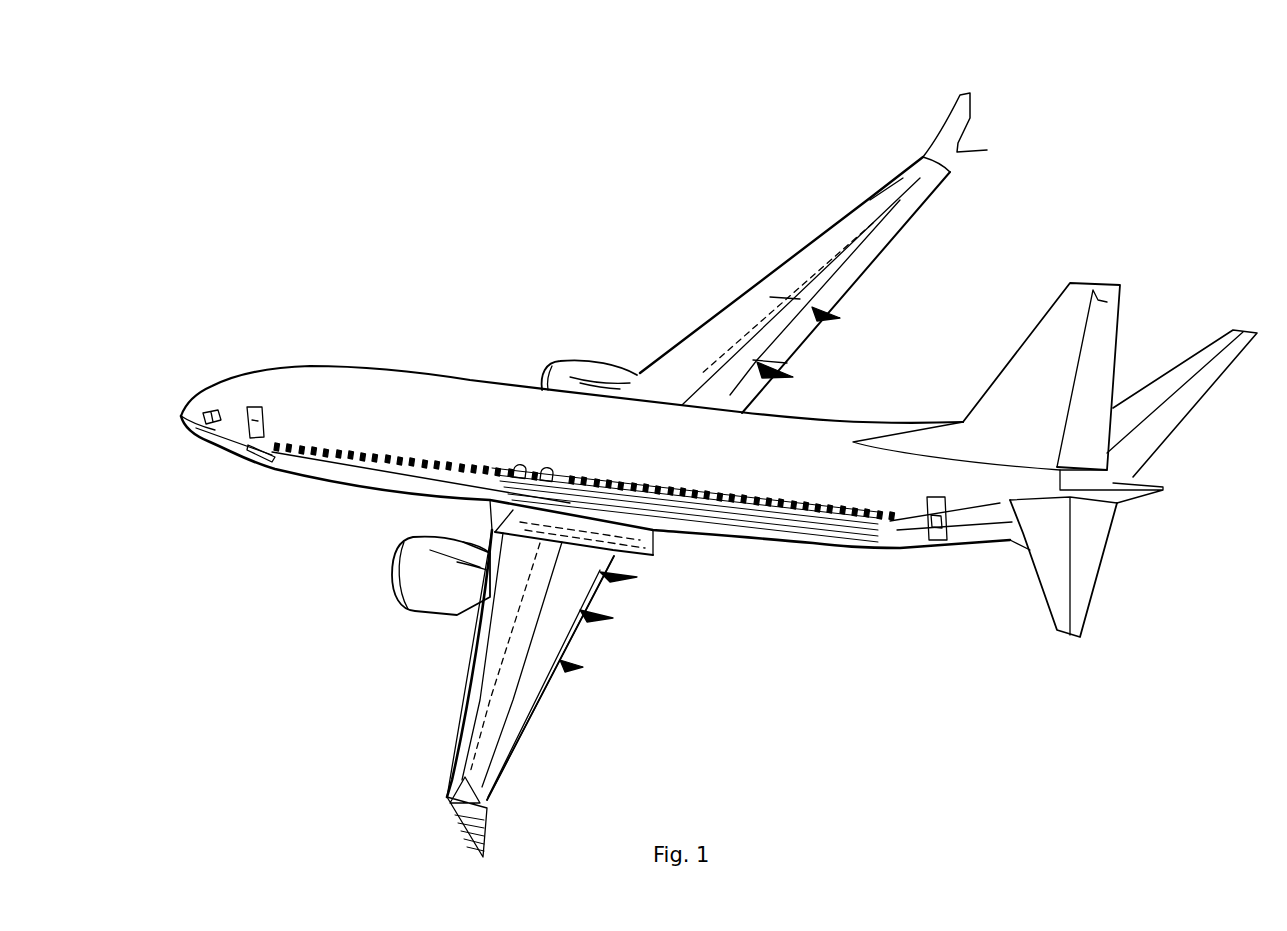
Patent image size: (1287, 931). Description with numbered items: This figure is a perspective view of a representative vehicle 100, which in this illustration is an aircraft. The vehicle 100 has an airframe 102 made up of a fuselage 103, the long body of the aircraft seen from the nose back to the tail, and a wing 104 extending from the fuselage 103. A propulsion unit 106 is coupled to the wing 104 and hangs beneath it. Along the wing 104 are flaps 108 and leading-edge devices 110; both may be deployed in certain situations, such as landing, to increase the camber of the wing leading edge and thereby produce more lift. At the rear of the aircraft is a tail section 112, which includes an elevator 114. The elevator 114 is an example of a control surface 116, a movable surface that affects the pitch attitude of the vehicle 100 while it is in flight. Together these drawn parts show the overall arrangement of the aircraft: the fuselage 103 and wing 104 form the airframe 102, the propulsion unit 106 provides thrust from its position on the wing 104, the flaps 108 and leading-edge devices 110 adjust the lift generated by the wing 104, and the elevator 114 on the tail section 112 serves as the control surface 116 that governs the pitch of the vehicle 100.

The vehicle 100 is at (721, 113).
The airframe 102 is at (378, 318).
The fuselage 103 is at (335, 485).
The wing 104 is at (483, 740).
The propulsion unit 106 is at (447, 617).
The flaps 108 is at (533, 727).
The leading-edge devices 110 is at (480, 680).
The tail section 112 is at (995, 322).
The elevator 114 is at (1107, 553).
The control surface 116 is at (1122, 628).